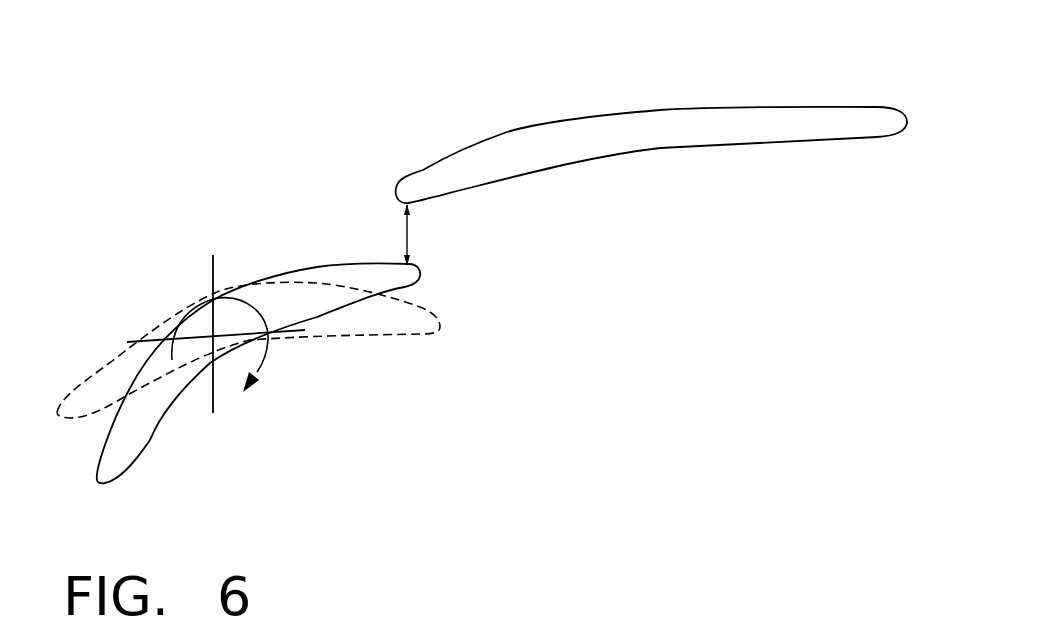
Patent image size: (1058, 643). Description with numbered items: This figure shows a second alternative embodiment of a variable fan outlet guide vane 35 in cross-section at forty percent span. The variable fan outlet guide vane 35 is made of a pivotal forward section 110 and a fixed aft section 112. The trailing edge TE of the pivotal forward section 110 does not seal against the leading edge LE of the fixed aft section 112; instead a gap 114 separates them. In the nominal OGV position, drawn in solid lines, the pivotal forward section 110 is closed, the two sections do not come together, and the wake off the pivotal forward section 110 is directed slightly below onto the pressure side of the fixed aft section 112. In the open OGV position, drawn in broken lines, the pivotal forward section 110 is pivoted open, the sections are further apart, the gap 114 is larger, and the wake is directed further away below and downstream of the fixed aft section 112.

The pivotal forward section 110 is at (330, 262).
The fixed aft section 112 is at (722, 107).
The gap 114 is at (407, 235).
The variable fan outlet guide vane 35 is at (538, 504).